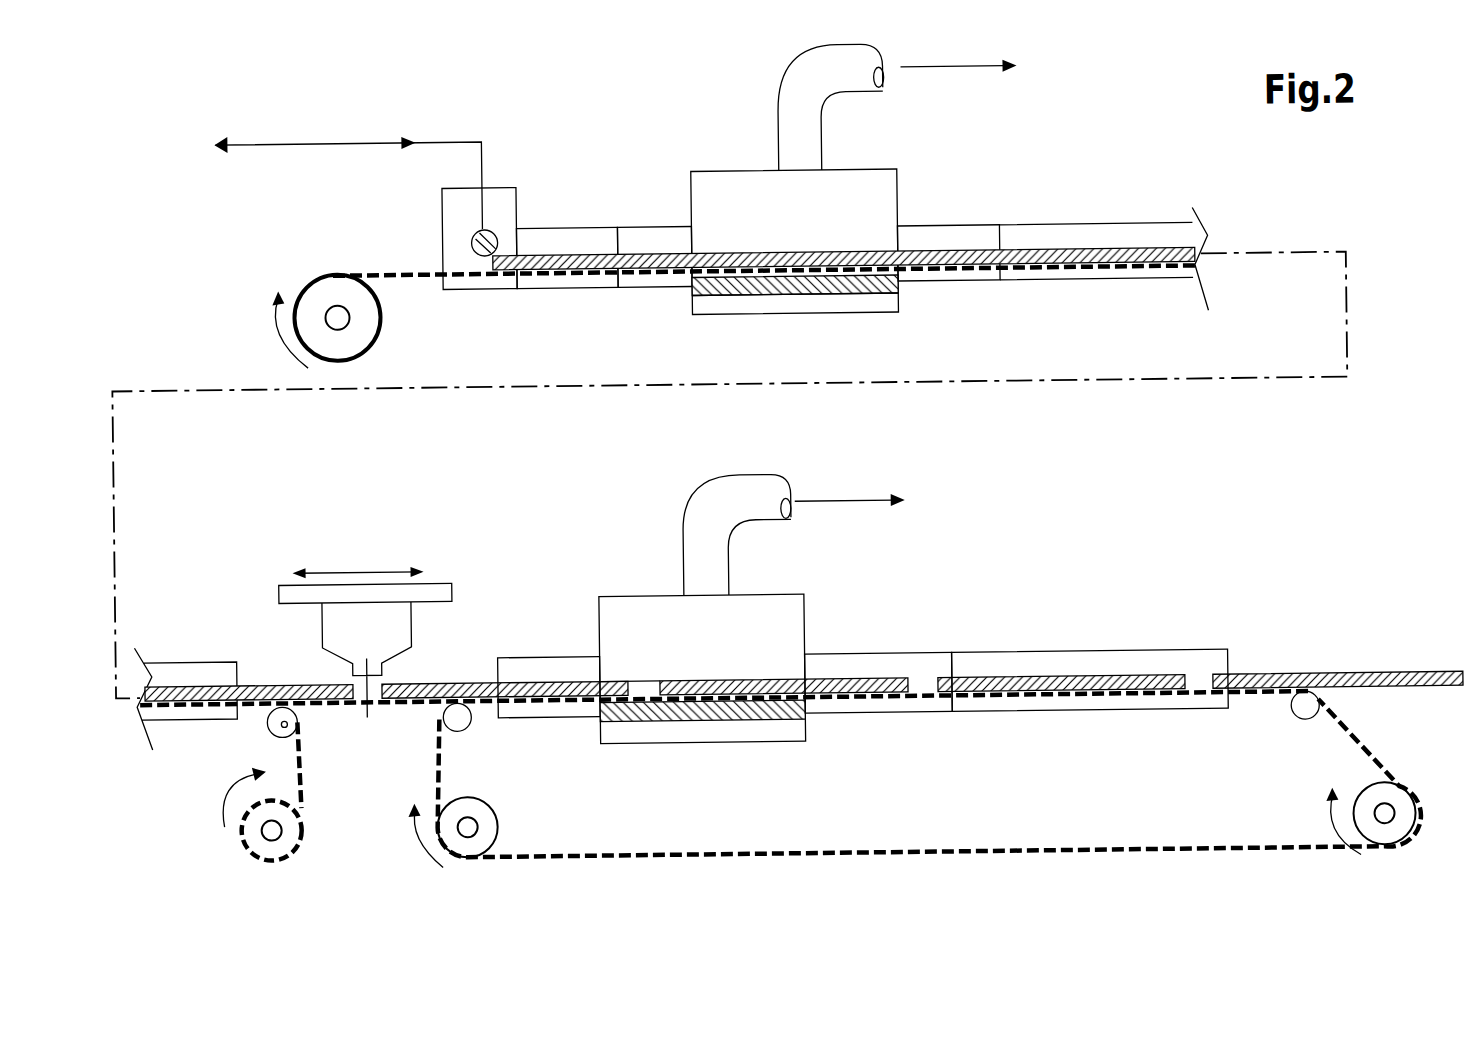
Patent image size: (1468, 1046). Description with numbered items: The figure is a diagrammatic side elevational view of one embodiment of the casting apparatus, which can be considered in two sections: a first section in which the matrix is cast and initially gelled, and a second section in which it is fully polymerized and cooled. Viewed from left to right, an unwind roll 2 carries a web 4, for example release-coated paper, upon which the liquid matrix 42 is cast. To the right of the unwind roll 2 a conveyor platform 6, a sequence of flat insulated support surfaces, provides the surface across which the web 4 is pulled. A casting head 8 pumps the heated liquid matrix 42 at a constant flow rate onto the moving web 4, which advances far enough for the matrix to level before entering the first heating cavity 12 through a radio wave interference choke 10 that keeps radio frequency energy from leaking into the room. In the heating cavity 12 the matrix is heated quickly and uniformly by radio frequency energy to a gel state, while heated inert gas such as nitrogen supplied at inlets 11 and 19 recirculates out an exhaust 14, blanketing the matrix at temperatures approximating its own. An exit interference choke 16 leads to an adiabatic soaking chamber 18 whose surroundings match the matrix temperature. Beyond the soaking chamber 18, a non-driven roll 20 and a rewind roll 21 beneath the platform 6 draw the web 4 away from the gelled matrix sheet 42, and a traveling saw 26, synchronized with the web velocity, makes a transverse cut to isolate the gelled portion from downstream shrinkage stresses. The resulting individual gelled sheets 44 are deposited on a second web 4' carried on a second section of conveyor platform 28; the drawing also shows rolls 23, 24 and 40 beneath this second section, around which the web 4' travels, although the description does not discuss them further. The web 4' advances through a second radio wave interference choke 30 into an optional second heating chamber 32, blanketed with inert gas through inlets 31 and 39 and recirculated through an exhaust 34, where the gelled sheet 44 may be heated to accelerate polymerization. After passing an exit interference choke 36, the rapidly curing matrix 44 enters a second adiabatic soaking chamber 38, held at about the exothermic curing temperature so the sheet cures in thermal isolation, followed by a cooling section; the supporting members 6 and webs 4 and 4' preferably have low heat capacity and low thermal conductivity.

The unwind roll 2 is at (353, 330).
The web 4 is at (764, 302).
The web 4' is at (781, 801).
The conveyor platform 6 is at (480, 289).
The casting head 8 is at (501, 239).
The radio wave interference choke 10 is at (661, 172).
The inlet 11 is at (643, 172).
The first heating cavity 12 is at (826, 219).
The exhaust 14 is at (806, 143).
The exit interference choke 16 is at (960, 225).
The adiabatic soaking chamber 18 is at (1106, 226).
The inlet 19 is at (205, 602).
The non-driven roll 20 is at (278, 732).
The rewind roll 21 is at (273, 834).
The belt roller 23 is at (468, 830).
The guide roller 24 is at (458, 715).
The traveling saw 26 is at (345, 616).
The second section of conveyor platform 28 is at (514, 727).
The second radio wave interference choke 30 is at (555, 655).
The inlet 31 is at (530, 600).
The second heating chamber 32 is at (650, 595).
The exhaust 34 is at (706, 565).
The exit interference choke 36 is at (865, 652).
The second adiabatic soaking chamber 38 is at (1088, 652).
The inlet 39 is at (1206, 648).
The drive roller 40 is at (1385, 830).
The liquid matrix 42 is at (550, 273).
The gelled sheets 44 is at (433, 679).